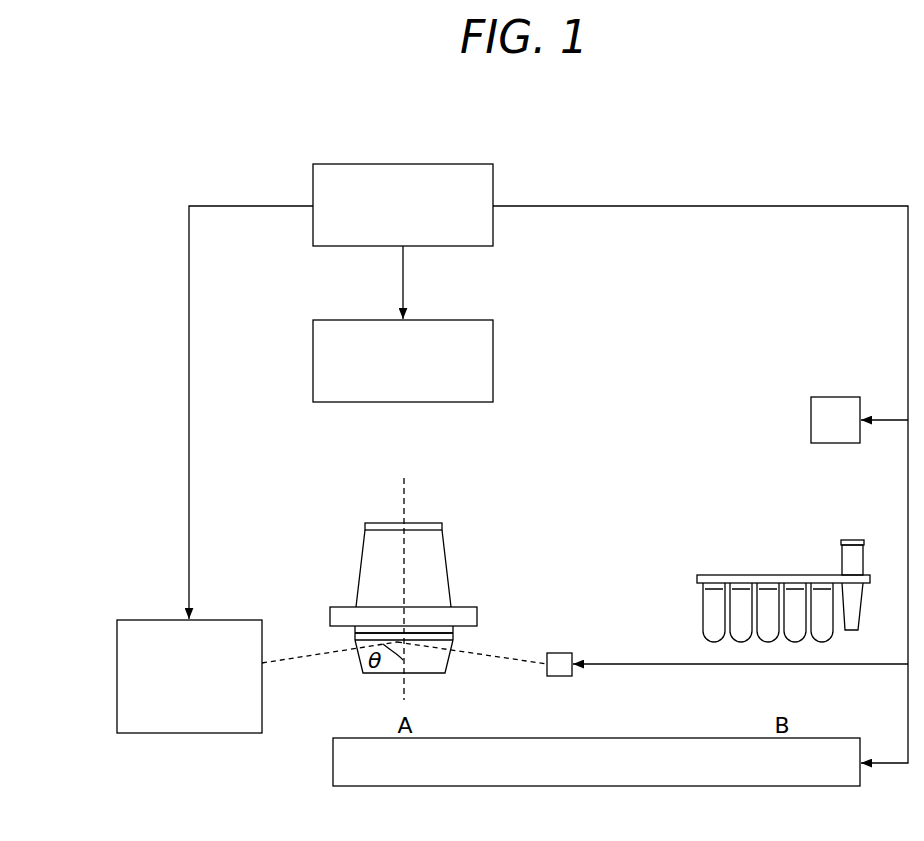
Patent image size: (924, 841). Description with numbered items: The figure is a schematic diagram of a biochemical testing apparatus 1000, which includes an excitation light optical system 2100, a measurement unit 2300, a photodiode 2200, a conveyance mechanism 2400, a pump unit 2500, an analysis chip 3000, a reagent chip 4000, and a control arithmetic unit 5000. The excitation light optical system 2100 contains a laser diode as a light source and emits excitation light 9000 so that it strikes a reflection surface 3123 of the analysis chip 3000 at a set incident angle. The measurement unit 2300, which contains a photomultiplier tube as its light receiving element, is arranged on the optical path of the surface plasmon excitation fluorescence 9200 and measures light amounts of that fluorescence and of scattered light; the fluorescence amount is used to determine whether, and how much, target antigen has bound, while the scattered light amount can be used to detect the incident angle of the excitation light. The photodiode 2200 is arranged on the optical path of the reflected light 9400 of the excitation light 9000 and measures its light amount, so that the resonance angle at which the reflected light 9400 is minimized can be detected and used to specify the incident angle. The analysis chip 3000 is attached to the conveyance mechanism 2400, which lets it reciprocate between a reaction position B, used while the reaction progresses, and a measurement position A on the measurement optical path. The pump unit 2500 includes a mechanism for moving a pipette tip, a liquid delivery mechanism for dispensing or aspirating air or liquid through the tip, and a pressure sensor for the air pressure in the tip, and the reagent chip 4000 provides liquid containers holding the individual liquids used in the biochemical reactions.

The biochemical testing apparatus 1000 is at (873, 117).
The control arithmetic unit 5000 is at (448, 164).
The measurement unit 2300 is at (452, 320).
The pump unit 2500 is at (822, 397).
The reagent chip 4000 is at (727, 537).
The analysis chip 3000 is at (323, 539).
The reflection surface 3123 is at (428, 640).
The surface plasmon excitation fluorescence 9200 is at (474, 574).
The excitation light optical system 2100 is at (153, 620).
The excitation light 9000 is at (331, 653).
The reflected light 9400 is at (519, 658).
The photodiode 2200 is at (563, 653).
The conveyance mechanism 2400 is at (779, 786).